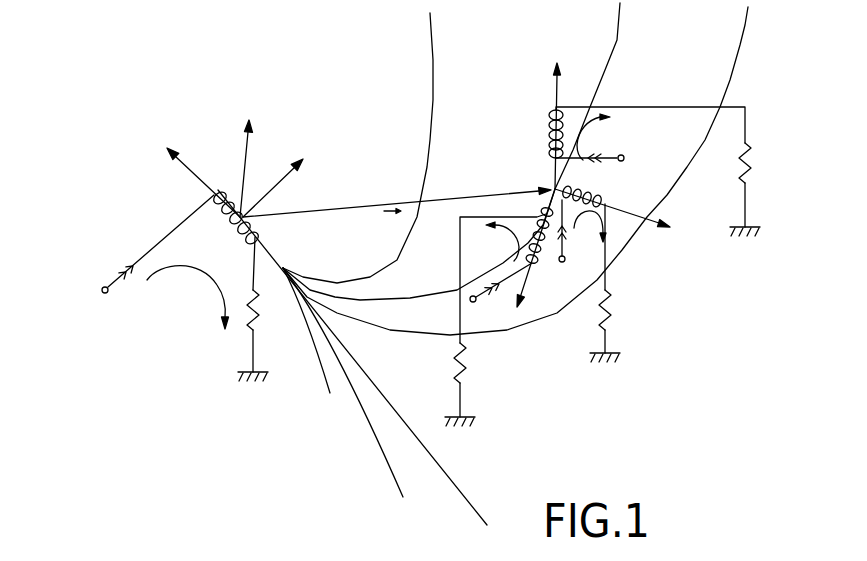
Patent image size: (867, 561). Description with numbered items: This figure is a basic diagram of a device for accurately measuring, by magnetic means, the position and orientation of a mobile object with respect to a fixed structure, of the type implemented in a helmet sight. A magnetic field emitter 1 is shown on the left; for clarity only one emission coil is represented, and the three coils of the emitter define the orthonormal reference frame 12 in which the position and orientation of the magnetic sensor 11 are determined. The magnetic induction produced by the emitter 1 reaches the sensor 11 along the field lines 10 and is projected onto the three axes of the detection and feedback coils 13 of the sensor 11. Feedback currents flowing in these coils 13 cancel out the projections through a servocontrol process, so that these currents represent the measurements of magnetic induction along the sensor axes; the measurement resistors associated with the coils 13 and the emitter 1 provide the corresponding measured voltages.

The emitter 1 is at (187, 312).
The magnetic field lines 10 is at (437, 457).
The magnetic sensor 11 is at (637, 333).
The orthonormal reference frame 12 is at (267, 188).
The detection and feedback coils 13 is at (548, 132).